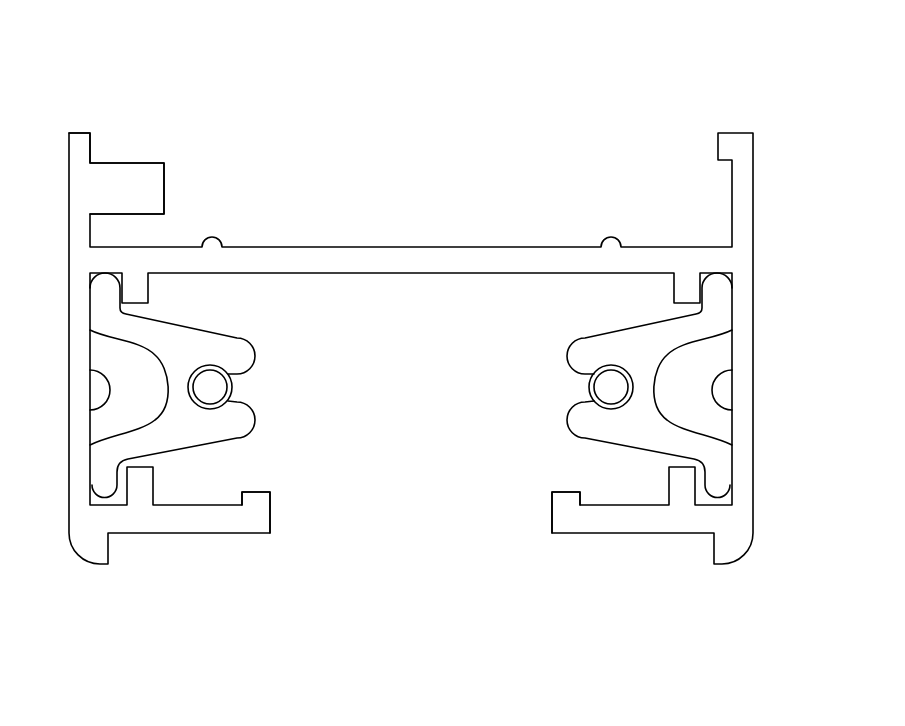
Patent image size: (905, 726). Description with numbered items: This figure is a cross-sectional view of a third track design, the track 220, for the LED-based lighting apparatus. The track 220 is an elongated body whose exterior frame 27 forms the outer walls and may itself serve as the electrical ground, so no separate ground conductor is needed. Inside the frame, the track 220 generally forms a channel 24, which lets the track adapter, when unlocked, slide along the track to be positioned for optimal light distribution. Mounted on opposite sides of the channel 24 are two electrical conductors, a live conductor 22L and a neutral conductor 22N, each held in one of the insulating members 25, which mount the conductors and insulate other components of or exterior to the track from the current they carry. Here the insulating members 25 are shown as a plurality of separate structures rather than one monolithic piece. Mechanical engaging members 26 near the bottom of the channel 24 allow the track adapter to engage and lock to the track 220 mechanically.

The track 220 is at (388, 130).
The channel 24 is at (367, 478).
The insulating members 25 is at (99, 497).
The mechanical engaging members 26 is at (260, 490).
The exterior frame 27 is at (80, 134).
The live conductor 22L is at (227, 392).
The neutral conductor 22N is at (612, 368).